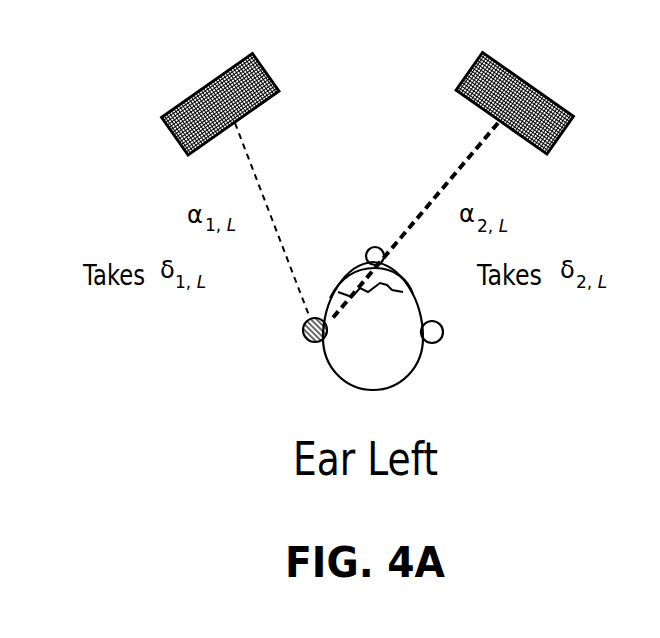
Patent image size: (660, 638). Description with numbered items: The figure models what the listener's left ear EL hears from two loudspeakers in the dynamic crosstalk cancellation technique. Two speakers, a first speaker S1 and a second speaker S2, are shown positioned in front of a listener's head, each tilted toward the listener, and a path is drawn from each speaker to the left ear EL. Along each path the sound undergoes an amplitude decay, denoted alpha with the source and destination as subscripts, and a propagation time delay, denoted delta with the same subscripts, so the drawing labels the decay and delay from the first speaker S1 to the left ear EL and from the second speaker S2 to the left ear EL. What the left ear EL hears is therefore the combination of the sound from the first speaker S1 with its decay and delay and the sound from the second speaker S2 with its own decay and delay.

The first speaker S1 is at (220, 178).
The second speaker S2 is at (469, 179).
The left ear EL is at (363, 327).